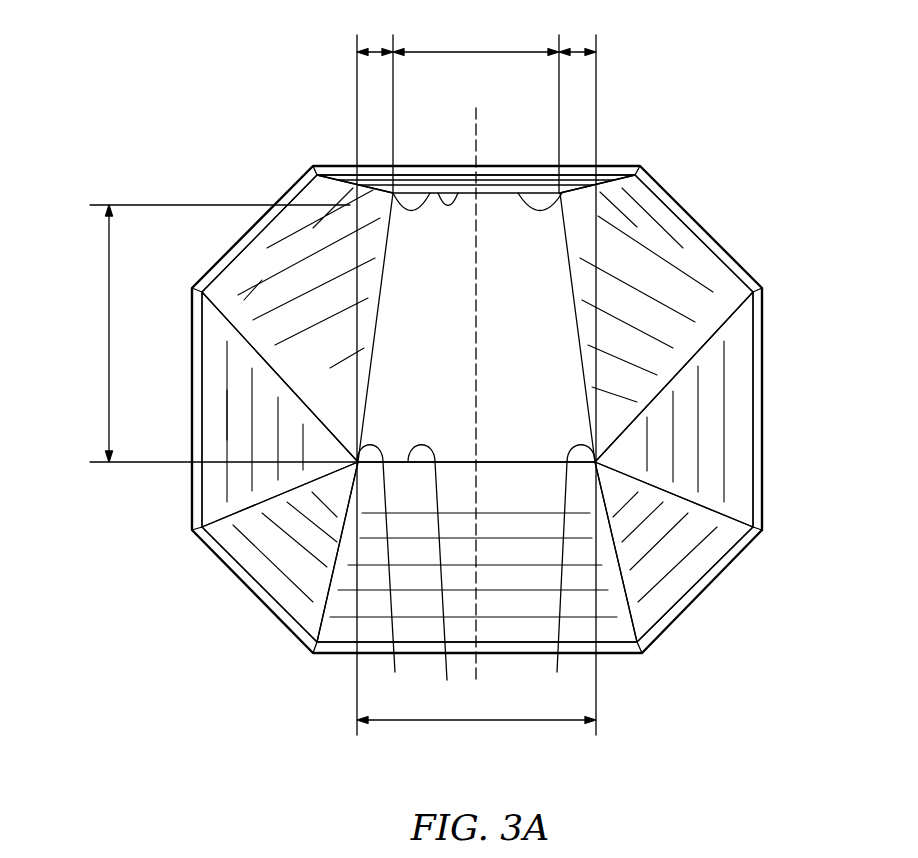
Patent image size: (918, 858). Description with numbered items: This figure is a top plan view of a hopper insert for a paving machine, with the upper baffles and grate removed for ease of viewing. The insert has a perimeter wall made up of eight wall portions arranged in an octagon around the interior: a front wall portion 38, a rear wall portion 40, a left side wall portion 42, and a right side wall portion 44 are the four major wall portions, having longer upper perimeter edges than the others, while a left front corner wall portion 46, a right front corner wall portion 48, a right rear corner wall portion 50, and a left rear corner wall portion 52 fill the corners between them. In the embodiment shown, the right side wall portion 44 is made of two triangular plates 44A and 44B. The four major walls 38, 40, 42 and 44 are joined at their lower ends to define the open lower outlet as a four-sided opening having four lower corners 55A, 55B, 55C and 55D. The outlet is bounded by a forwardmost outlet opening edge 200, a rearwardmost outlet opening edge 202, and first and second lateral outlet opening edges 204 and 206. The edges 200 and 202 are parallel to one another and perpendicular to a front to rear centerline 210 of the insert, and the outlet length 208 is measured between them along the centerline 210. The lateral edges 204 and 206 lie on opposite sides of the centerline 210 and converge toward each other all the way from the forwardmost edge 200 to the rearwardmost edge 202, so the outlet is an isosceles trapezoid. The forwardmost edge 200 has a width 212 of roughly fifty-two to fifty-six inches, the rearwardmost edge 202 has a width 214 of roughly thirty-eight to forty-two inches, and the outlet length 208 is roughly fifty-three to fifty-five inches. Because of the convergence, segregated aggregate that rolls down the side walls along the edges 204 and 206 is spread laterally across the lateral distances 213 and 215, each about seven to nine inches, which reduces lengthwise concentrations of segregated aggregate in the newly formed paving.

The front wall portion 38 is at (525, 628).
The rear wall portion 40 is at (577, 182).
The left side wall portion 42 is at (733, 333).
The right side wall portion 44 is at (213, 337).
The triangular plate 44A is at (223, 398).
The triangular plate 44B is at (250, 287).
The left front corner wall portion 46 is at (648, 607).
The right front corner wall portion 48 is at (305, 607).
The right rear corner wall portion 50 is at (310, 195).
The left rear corner wall portion 52 is at (665, 225).
The lower corner 55A is at (567, 571).
The lower corner 55B is at (385, 571).
The lower corner 55C is at (430, 193).
The lower corner 55D is at (518, 193).
The forwardmost outlet opening edge 200 is at (435, 576).
The rearwardmost outlet opening edge 202 is at (458, 193).
The first lateral outlet opening edge 204 is at (575, 300).
The second lateral outlet opening edge 206 is at (368, 411).
The outlet length 208 is at (105, 333).
The front to rear centerline 210 is at (477, 113).
The width 212 is at (477, 722).
The lateral distance 213 is at (375, 48).
The width 214 is at (478, 50).
The lateral distance 215 is at (574, 50).